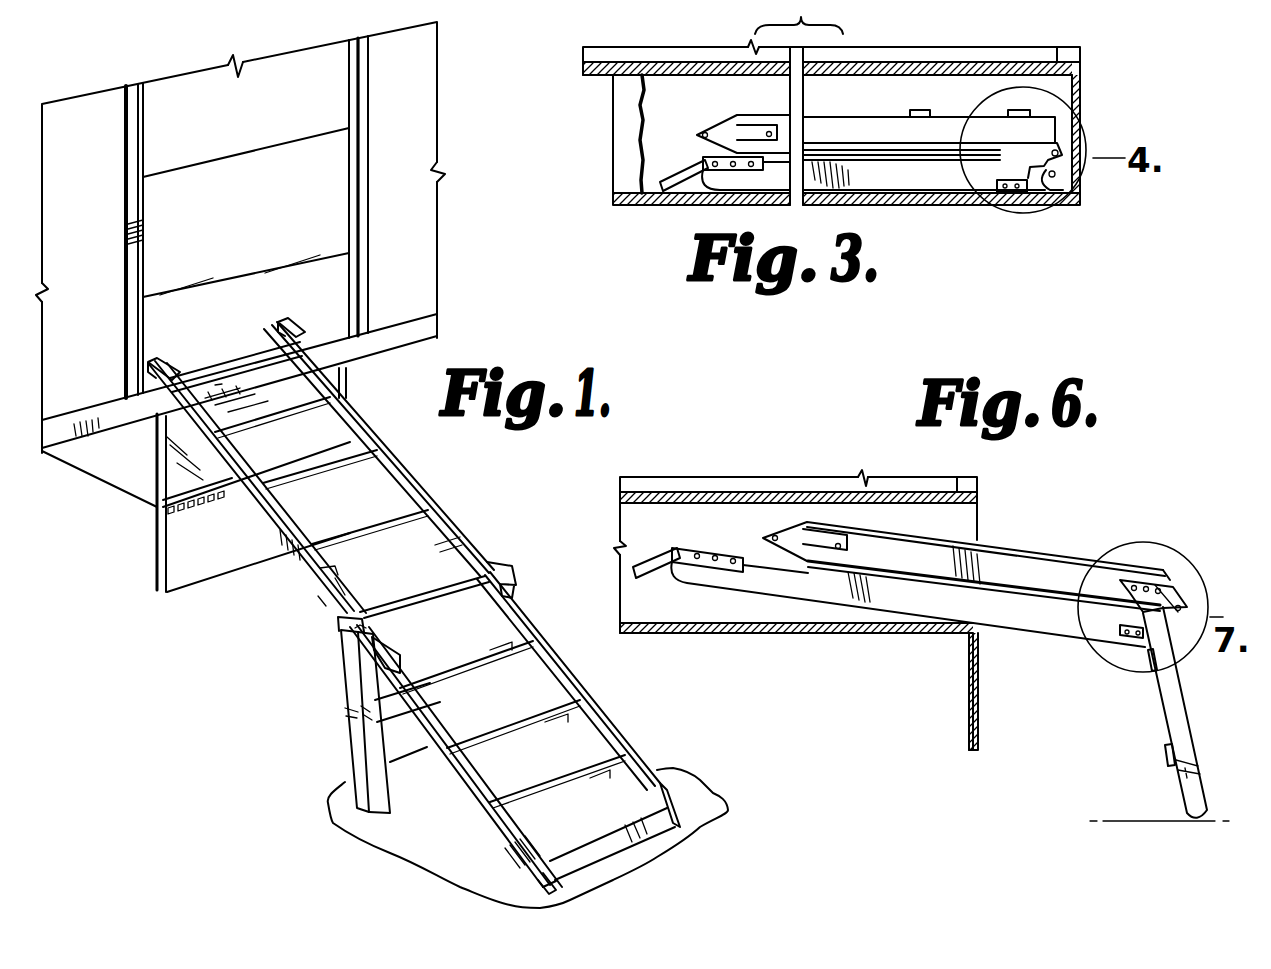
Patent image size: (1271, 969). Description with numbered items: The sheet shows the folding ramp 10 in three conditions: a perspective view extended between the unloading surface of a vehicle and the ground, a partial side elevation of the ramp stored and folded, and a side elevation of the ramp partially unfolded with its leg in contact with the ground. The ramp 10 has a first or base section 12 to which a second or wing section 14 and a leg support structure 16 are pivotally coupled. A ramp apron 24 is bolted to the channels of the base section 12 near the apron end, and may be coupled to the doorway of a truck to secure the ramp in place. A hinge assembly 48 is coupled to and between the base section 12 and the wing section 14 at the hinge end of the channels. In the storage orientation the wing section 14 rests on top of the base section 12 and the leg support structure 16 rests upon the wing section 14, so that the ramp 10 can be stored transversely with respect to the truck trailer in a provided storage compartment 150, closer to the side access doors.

In FIG. 1, the folding ramp 10 is at (414, 606).
In FIG. 1, the base section 12 is at (406, 457).
In FIG. 3, the base section 12 is at (927, 190).
In FIG. 6, the base section 12 is at (1027, 637).
In FIG. 1, the wing section 14 is at (614, 712).
In FIG. 3, the wing section 14 is at (816, 128).
In FIG. 6, the wing section 14 is at (1043, 549).
In FIG. 1, the leg support structure 16 is at (340, 701).
In FIG. 3, the leg support structure 16 is at (963, 112).
In FIG. 6, the leg support structure 16 is at (1162, 722).
In FIG. 1, the ramp apron 24 is at (218, 358).
In FIG. 3, the hinge assembly 48 is at (1066, 147).
In FIG. 6, the hinge assembly 48 is at (1189, 606).
In FIG. 1, the storage compartment 150 is at (122, 477).
In FIG. 3, the storage compartment 150 is at (1040, 210).
In FIG. 6, the storage compartment 150 is at (810, 635).